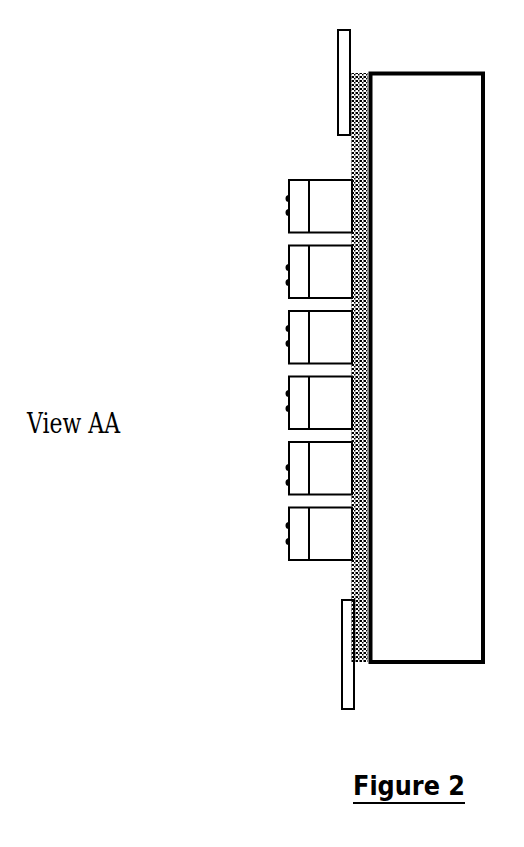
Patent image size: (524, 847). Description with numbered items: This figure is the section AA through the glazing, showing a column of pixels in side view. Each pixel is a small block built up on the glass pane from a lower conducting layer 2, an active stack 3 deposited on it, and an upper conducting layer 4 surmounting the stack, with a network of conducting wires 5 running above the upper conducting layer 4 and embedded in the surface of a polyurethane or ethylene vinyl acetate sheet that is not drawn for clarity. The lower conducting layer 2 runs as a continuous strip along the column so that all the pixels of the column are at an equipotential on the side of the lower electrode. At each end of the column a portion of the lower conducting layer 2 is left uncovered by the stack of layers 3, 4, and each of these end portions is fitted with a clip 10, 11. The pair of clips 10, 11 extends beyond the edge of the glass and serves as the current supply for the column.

The lower conducting layer 2 is at (356, 583).
The active stack 3 is at (272, 535).
The upper conducting layer 4 is at (297, 552).
The network of conducting wires 5 is at (283, 527).
The clip 10 is at (347, 693).
The clip 11 is at (347, 55).